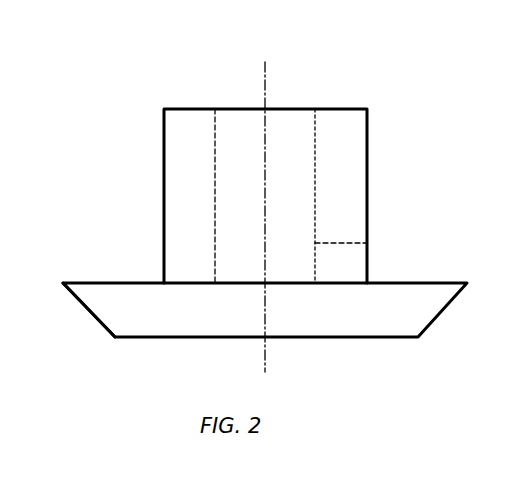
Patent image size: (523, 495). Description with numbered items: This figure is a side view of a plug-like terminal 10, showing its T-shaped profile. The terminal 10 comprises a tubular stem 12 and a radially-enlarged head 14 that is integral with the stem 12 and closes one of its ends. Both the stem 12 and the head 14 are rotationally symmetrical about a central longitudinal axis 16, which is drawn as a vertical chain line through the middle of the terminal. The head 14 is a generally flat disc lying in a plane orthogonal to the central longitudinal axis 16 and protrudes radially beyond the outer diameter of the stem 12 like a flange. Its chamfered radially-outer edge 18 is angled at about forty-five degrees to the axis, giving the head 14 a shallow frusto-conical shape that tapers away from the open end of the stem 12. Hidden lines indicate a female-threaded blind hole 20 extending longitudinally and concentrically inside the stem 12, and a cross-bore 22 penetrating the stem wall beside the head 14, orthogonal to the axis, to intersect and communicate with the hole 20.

The terminal 10 is at (408, 90).
The tubular stem 12 is at (171, 138).
The head 14 is at (100, 283).
The central longitudinal axis 16 is at (267, 72).
The chamfered radially-outer edge 18 is at (86, 308).
The female-threaded blind hole 20 is at (232, 115).
The cross-bore 22 is at (373, 257).